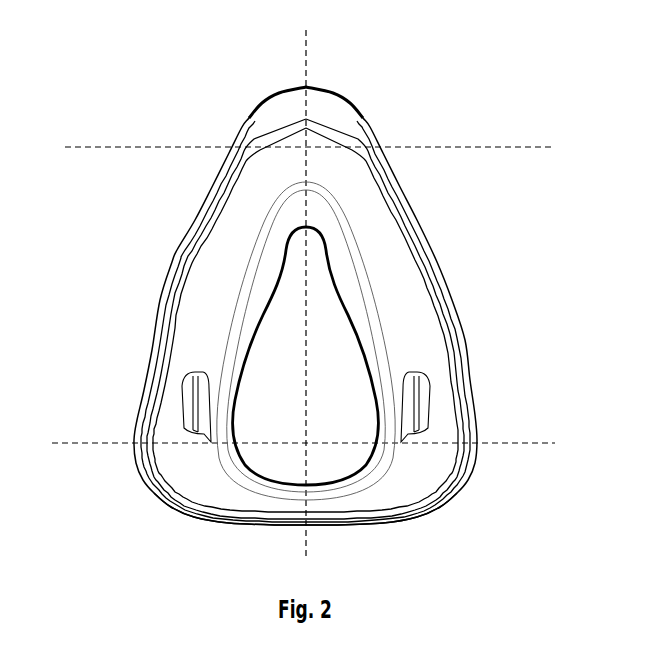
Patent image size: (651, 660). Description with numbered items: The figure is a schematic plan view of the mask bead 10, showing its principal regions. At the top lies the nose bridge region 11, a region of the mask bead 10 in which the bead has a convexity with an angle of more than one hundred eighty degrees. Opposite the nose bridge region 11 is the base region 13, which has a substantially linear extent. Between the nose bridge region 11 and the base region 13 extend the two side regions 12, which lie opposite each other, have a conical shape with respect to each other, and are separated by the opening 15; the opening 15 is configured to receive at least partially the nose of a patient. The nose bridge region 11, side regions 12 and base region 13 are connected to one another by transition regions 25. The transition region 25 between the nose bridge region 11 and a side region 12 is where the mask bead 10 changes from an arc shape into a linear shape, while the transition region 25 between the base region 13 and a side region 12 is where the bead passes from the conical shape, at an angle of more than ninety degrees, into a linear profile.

The mask bead 10 is at (444, 130).
The nose bridge region 11 is at (368, 98).
The side region 12 is at (171, 261).
The base region 13 is at (477, 478).
The opening 15 is at (337, 374).
The transition region 25 is at (227, 140).